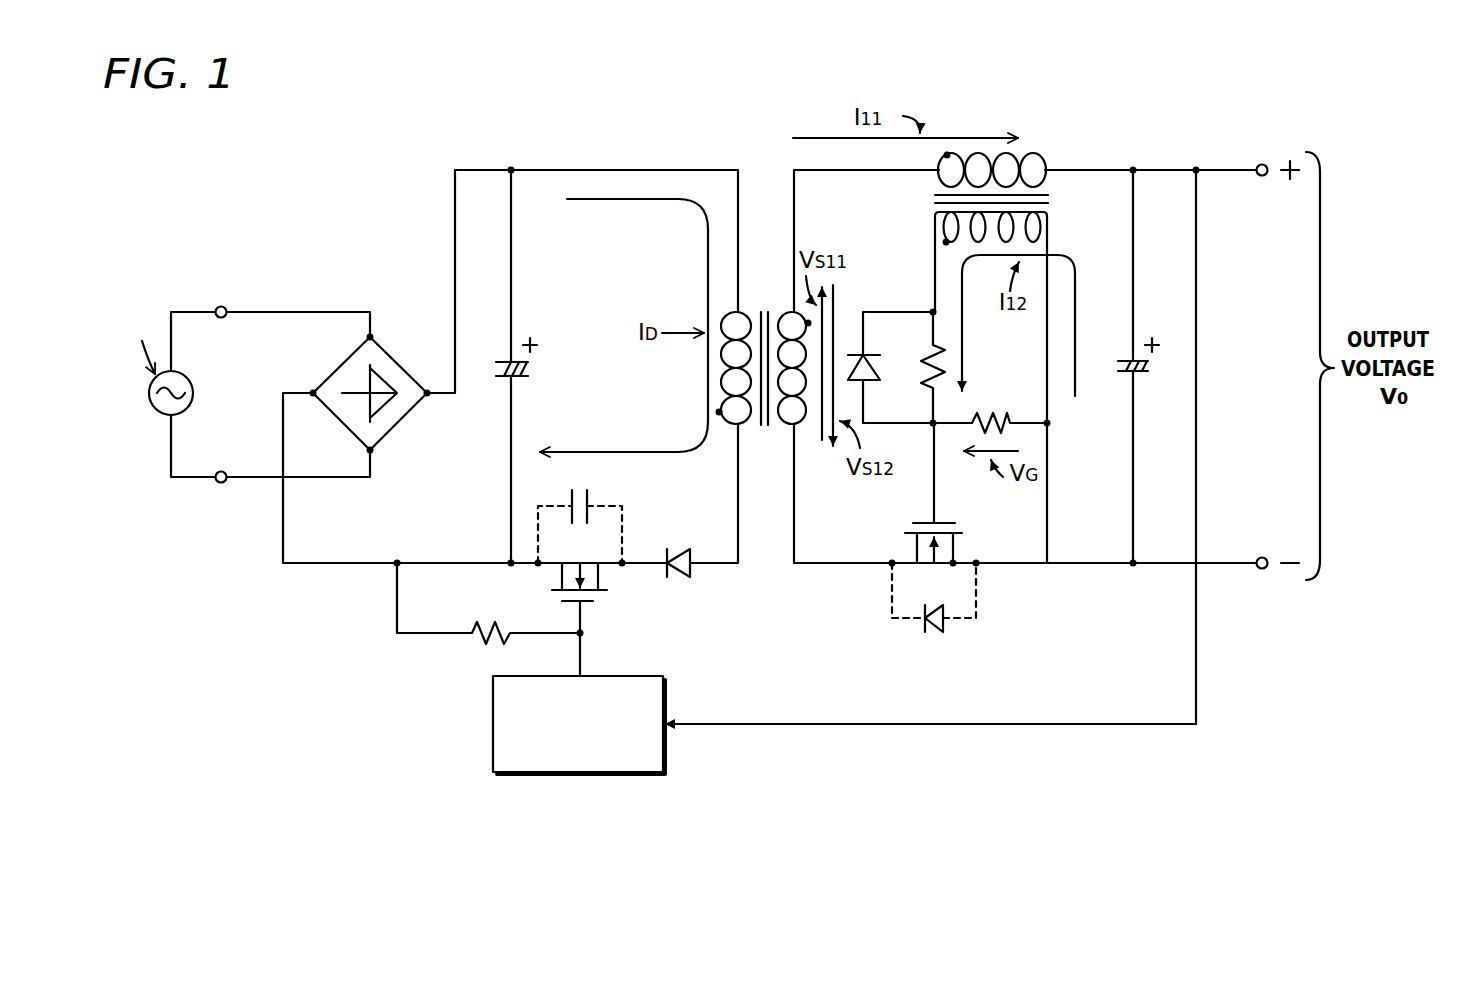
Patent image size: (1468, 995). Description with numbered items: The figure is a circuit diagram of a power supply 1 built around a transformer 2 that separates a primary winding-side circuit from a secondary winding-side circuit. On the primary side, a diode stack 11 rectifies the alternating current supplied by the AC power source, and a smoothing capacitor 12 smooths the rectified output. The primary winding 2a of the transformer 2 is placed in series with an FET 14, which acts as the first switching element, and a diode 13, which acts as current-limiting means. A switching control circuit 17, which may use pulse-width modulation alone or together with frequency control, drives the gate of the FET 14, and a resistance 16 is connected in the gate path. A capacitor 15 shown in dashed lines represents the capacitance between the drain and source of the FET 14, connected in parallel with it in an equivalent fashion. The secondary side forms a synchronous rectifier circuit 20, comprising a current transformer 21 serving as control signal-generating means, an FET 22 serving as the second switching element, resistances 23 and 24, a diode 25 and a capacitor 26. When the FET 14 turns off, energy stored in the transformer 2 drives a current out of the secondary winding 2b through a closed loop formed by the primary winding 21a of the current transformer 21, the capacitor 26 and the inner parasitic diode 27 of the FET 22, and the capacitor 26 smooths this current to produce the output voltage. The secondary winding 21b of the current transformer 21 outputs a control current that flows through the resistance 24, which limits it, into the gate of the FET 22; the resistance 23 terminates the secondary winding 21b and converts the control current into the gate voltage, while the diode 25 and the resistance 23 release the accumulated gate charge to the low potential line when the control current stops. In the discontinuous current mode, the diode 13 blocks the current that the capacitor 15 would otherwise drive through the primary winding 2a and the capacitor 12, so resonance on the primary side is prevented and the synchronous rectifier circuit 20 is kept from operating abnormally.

The power supply 1 is at (744, 101).
The transformer 2 is at (766, 198).
The primary winding 2a is at (741, 312).
The secondary winding 2b is at (782, 427).
The diode stack 11 is at (403, 369).
The smoothing capacitor 12 is at (506, 377).
The diode 13 is at (676, 549).
The FET 14 is at (593, 604).
The capacitor 15 is at (597, 505).
The resistance 16 is at (494, 628).
The switching control circuit 17 is at (630, 676).
The synchronous rectifier circuit 20 is at (1131, 147).
The current transformer 21 is at (1057, 148).
The primary winding of the current transformer 21a is at (937, 179).
The secondary winding of the current transformer 21b is at (1050, 219).
The FET 22 is at (941, 528).
The resistance 23 is at (991, 418).
The resistance 24 is at (925, 369).
The diode 25 is at (881, 369).
The capacitor 26 is at (1123, 375).
The inner parasitic diode 27 is at (931, 634).